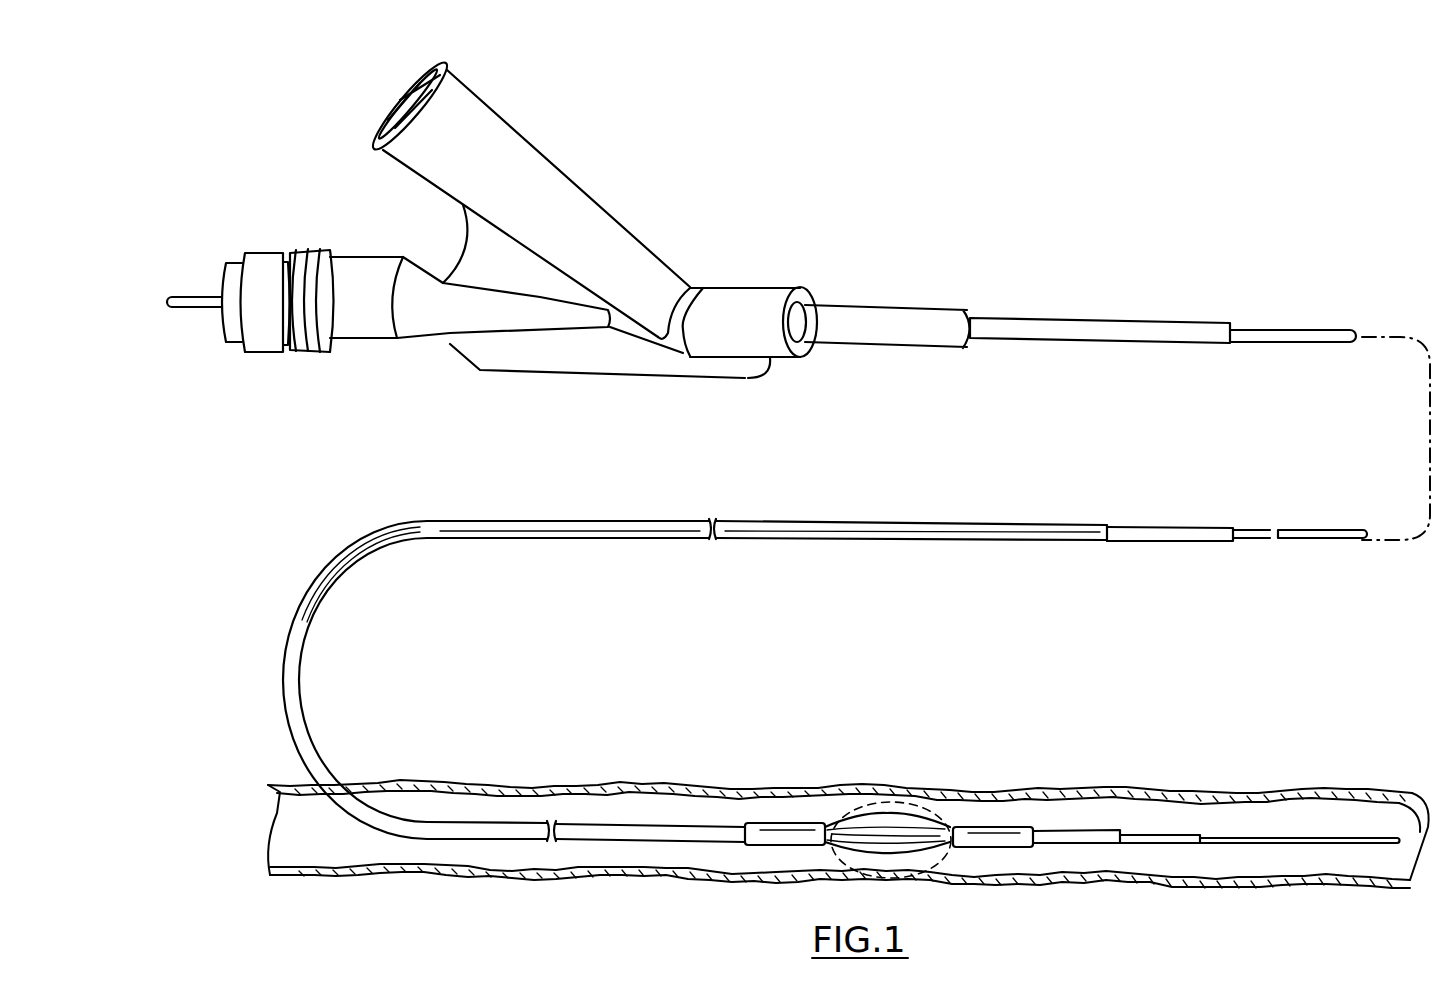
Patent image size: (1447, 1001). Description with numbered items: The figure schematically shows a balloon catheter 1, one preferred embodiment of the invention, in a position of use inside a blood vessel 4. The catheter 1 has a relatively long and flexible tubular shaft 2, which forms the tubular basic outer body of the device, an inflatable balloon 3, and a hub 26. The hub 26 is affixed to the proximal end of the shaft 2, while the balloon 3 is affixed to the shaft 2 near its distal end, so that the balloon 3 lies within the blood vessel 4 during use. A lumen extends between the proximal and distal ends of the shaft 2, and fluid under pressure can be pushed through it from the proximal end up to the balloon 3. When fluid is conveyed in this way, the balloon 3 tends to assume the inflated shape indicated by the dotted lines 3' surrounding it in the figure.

The balloon catheter 1 is at (497, 515).
The tubular shaft 2 is at (880, 531).
The inflatable balloon 3 is at (1072, 826).
The inflated shape of the balloon 3' is at (917, 840).
The blood vessel 4 is at (610, 790).
The hub 26 is at (590, 203).